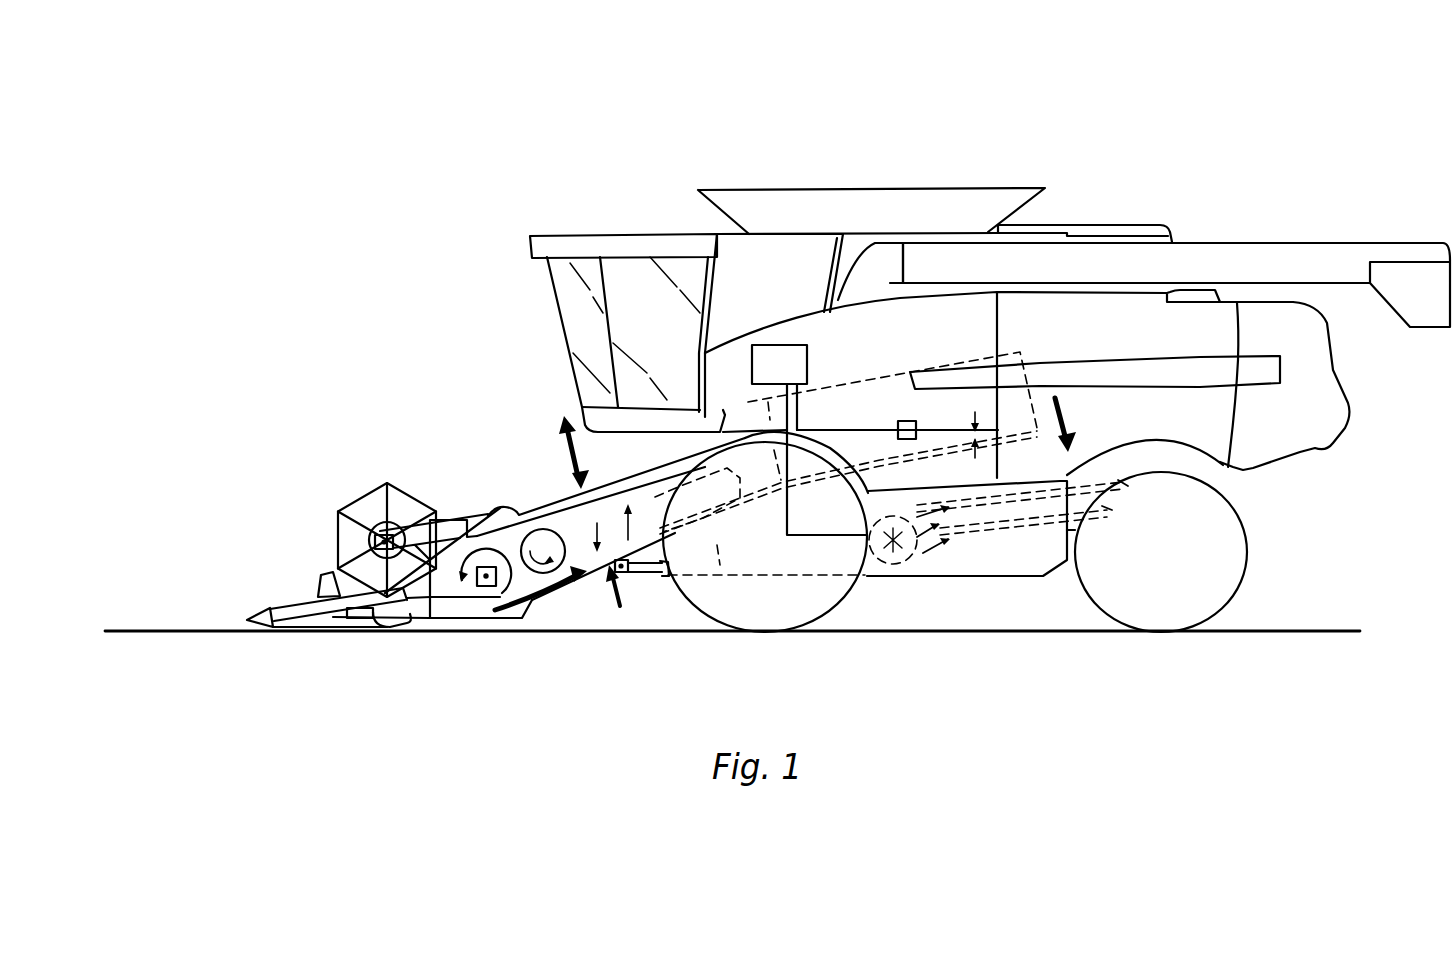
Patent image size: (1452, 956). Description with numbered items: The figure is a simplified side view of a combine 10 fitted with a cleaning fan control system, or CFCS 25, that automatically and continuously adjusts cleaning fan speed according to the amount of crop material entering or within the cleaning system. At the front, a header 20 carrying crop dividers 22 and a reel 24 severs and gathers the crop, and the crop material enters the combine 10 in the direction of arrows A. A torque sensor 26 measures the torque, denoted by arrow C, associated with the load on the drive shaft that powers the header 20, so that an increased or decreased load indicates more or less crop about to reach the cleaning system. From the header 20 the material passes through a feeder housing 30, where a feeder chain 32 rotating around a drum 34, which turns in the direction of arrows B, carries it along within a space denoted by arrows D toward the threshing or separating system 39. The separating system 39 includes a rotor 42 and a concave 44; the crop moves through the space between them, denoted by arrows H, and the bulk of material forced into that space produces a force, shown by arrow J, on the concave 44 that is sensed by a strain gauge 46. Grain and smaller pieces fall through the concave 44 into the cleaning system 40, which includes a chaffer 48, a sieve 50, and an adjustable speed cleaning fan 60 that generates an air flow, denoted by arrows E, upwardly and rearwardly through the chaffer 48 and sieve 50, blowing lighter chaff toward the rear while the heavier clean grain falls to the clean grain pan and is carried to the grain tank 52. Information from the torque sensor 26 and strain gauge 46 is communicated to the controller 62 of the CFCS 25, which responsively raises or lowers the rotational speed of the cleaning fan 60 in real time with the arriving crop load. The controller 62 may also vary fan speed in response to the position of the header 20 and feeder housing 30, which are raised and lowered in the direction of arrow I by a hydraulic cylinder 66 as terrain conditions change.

The combine 10 is at (1322, 168).
The header 20 is at (478, 498).
The crop dividers 22 is at (300, 598).
The reel 24 is at (363, 490).
The cleaning fan control system (CFCS) 25 is at (580, 233).
The torque sensor 26 is at (483, 586).
The feeder housing 30 is at (590, 602).
The feeder chain 32 is at (610, 502).
The drum 34 is at (553, 530).
The threshing or separating system 39 is at (945, 322).
The cleaning system 40 is at (1010, 548).
The rotor 42 is at (868, 393).
The concave 44 is at (803, 483).
The strain gauge 46 is at (914, 424).
The chaffer 48 is at (1125, 483).
The sieve 50 is at (1108, 508).
The grain tank 52 is at (880, 196).
The cleaning fan 60 is at (889, 550).
The controller 62 is at (777, 345).
The hydraulic cylinder 66 is at (658, 578).
The arrows A is at (563, 600).
The arrows B is at (540, 532).
The arrow C is at (487, 620).
The arrows D is at (618, 608).
The arrows E is at (930, 550).
The arrows H is at (977, 422).
The arrow I is at (560, 453).
The arrow J is at (1063, 408).